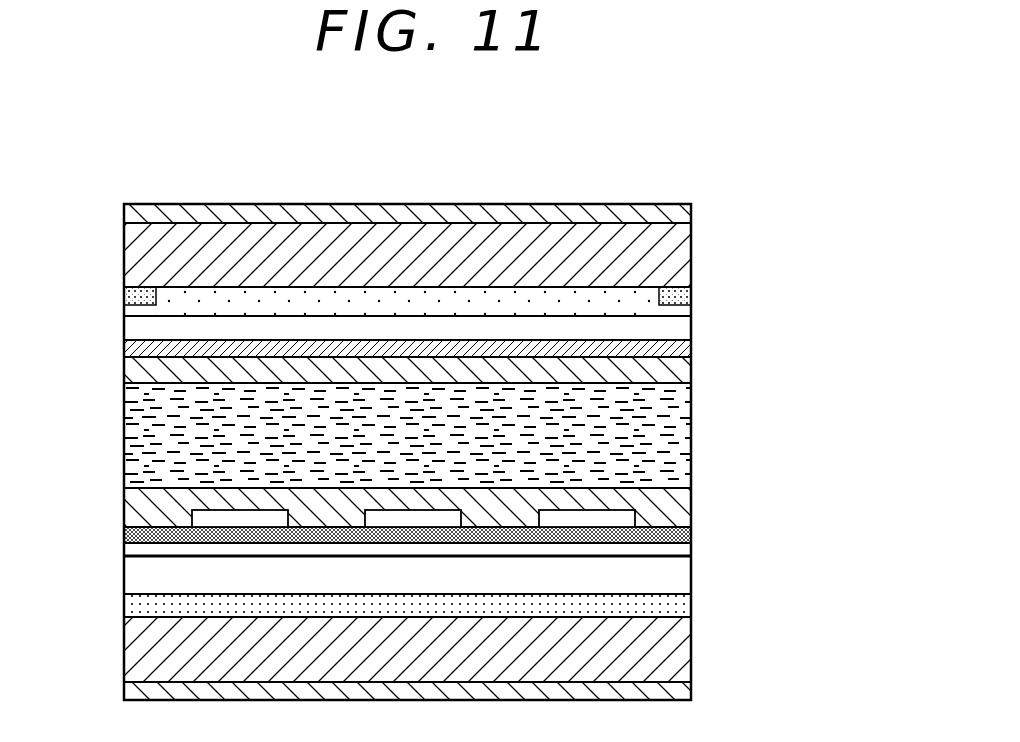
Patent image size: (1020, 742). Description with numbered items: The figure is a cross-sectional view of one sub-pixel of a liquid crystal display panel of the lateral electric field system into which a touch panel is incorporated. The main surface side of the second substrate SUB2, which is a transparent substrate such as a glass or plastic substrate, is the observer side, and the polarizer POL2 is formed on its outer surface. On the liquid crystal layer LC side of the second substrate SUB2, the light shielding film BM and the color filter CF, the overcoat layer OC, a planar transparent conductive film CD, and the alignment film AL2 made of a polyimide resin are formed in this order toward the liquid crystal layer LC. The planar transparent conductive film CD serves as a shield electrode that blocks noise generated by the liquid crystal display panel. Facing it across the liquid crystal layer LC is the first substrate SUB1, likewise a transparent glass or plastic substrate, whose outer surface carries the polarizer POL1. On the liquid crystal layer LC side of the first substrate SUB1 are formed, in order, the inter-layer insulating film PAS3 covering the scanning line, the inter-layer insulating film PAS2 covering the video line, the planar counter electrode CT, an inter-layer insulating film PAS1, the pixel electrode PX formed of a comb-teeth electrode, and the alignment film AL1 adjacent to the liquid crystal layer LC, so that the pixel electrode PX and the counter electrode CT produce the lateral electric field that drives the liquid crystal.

The polarizer POL2 is at (691, 216).
The second substrate SUB2 is at (691, 258).
The color filter CF is at (402, 310).
The light shielding film BM is at (124, 297).
The overcoat layer OC is at (691, 331).
The planar transparent conductive film CD is at (128, 350).
The alignment film AL2 is at (691, 372).
The liquid crystal layer LC is at (133, 425).
The pixel electrode PX is at (580, 513).
The alignment film AL1 is at (691, 497).
The inter-layer insulating film PAS1 is at (128, 535).
The planar counter electrode CT is at (691, 554).
The inter-layer insulating film PAS2 is at (133, 578).
The inter-layer insulating film PAS3 is at (691, 608).
The first substrate SUB1 is at (691, 648).
The polarizer POL1 is at (691, 691).